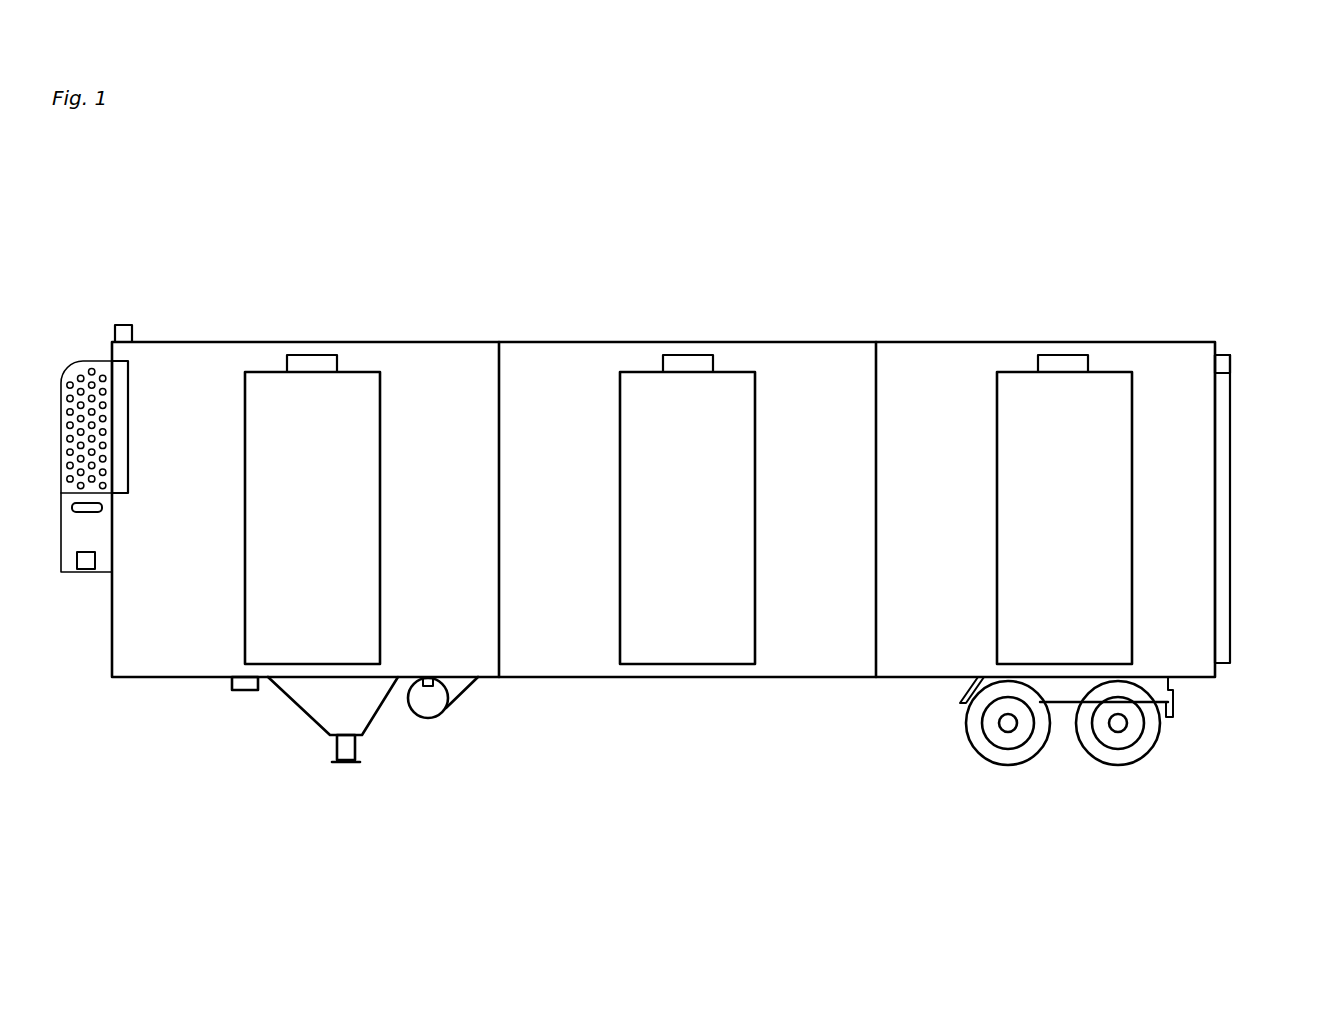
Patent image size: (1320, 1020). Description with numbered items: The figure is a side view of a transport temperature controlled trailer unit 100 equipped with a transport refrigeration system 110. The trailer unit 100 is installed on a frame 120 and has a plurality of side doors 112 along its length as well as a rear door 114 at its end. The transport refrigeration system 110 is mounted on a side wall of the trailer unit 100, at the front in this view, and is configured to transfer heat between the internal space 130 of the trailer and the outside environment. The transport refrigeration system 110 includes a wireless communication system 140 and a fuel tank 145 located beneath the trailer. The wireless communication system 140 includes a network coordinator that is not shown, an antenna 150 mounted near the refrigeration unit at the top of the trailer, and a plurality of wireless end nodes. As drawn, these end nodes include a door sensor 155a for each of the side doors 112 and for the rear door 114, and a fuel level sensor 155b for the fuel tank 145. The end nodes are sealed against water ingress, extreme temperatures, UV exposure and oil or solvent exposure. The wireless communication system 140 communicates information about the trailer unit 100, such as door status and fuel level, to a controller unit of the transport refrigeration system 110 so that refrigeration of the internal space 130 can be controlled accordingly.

The transport temperature controlled trailer unit 100 is at (688, 439).
The transport refrigeration system 110 is at (68, 360).
The side doors 112 is at (382, 400).
The rear door 114 is at (1232, 393).
The frame 120 is at (796, 678).
The internal space 130 is at (537, 392).
The wireless communication system 140 is at (303, 327).
The fuel tank 145 is at (421, 718).
The antenna 150 is at (130, 325).
The door sensor 155a is at (313, 355).
The fuel level sensor 155b is at (430, 686).